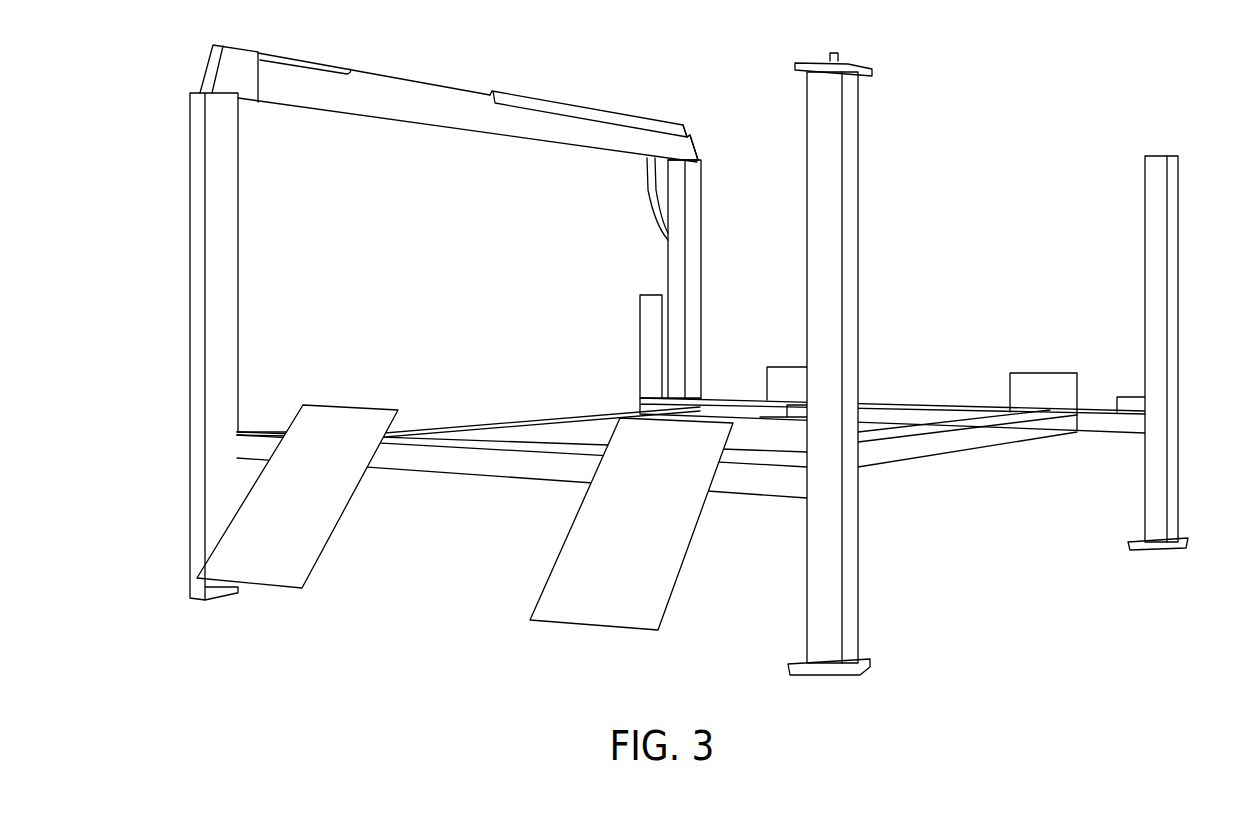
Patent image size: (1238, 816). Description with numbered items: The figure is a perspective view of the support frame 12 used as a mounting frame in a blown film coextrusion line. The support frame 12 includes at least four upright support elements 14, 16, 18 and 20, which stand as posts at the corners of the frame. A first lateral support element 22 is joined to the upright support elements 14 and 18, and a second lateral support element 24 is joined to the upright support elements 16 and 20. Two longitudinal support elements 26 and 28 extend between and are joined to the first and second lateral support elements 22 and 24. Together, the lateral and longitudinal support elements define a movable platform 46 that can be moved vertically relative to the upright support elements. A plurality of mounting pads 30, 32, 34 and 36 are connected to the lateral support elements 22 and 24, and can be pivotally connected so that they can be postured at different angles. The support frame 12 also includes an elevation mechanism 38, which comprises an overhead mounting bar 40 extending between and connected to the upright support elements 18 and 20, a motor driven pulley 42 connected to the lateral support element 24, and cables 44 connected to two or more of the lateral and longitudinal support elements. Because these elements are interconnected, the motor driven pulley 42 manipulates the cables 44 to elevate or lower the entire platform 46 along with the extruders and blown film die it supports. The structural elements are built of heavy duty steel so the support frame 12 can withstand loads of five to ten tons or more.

The support frame 12 is at (984, 131).
The upright support element 14 is at (832, 255).
The upright support element 16 is at (1152, 228).
The upright support element 18 is at (218, 268).
The upright support element 20 is at (693, 212).
The first lateral support element 22 is at (483, 462).
The second lateral support element 24 is at (913, 404).
The longitudinal support element 26 is at (533, 420).
The longitudinal support element 28 is at (950, 438).
The mounting pad 30 is at (607, 607).
The mounting pad 32 is at (273, 563).
The mounting pad 34 is at (1045, 390).
The mounting pad 36 is at (787, 366).
The elevation mechanism 38 is at (692, 140).
The overhead mounting bar 40 is at (420, 100).
The motor driven pulley 42 is at (648, 348).
The cable 44 is at (340, 66).
The movable platform 46 is at (260, 432).